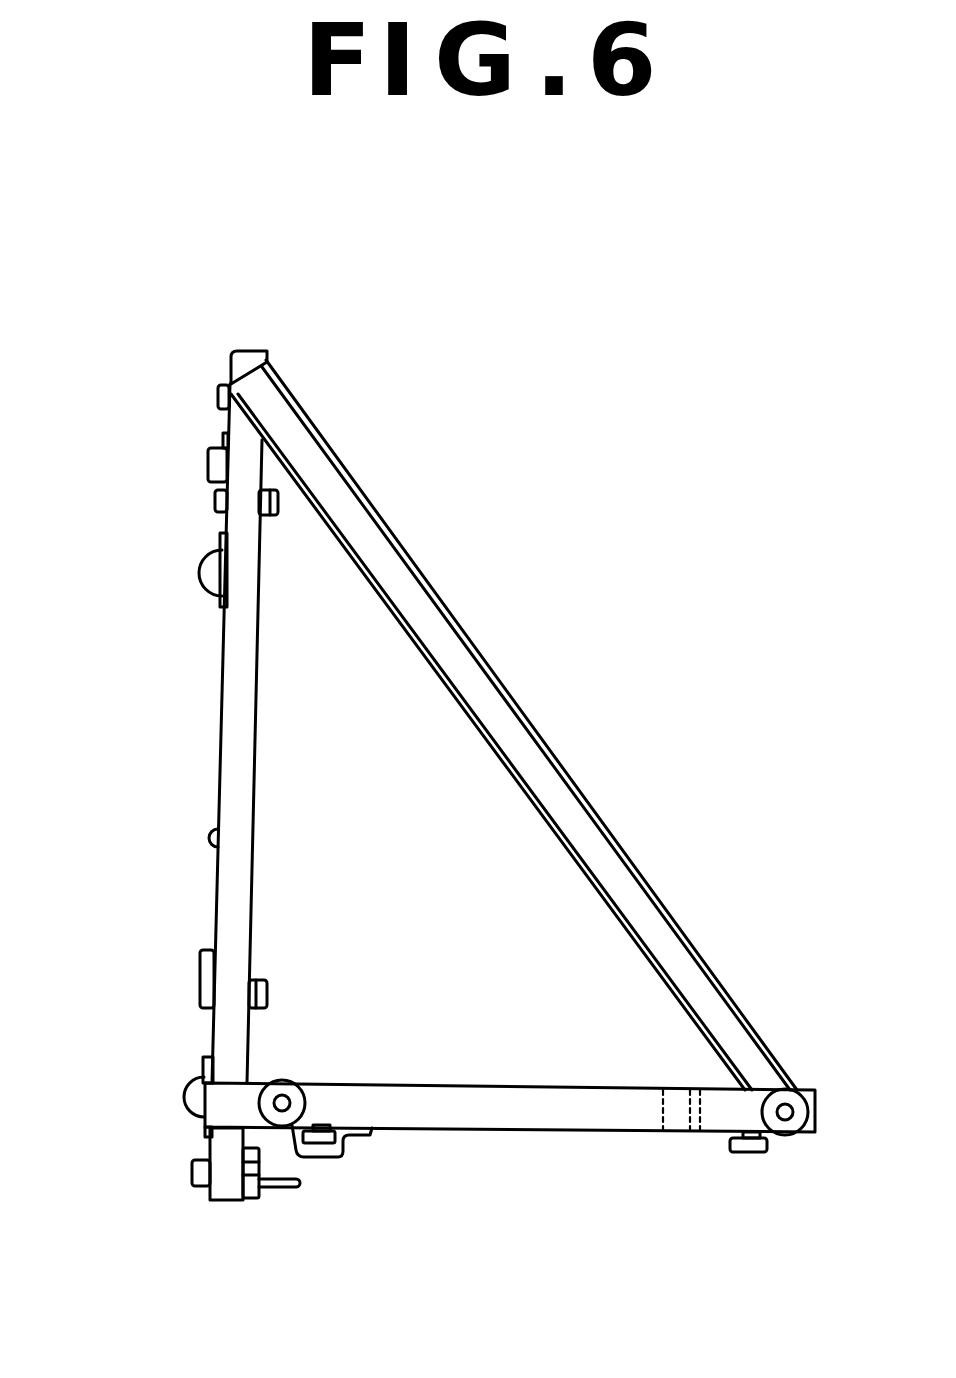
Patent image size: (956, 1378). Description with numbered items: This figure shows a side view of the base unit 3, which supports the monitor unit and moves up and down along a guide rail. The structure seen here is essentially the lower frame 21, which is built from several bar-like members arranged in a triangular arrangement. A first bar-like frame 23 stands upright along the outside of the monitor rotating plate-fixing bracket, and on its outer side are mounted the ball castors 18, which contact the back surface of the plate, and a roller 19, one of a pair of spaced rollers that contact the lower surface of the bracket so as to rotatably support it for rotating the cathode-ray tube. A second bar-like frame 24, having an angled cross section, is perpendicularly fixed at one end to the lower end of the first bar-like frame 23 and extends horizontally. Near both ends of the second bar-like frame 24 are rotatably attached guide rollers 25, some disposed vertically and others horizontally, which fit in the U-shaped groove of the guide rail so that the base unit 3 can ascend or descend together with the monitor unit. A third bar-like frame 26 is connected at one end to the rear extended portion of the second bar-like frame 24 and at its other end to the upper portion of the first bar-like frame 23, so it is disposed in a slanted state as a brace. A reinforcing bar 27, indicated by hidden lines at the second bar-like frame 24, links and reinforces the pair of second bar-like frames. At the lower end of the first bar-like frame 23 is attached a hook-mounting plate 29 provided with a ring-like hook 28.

The base unit 3 is at (181, 489).
The ball castor 18 is at (203, 573).
The roller 19 is at (200, 965).
The lower frame 21 is at (514, 725).
The first bar-like frame 23 is at (240, 763).
The second bar-like frame 24 is at (510, 1120).
The guide roller 25 is at (330, 1127).
The third bar-like frame 26 is at (473, 632).
The reinforcing bar 27 is at (660, 1135).
The ring-like hook 28 is at (283, 1188).
The hook-mounting plate 29 is at (220, 1200).